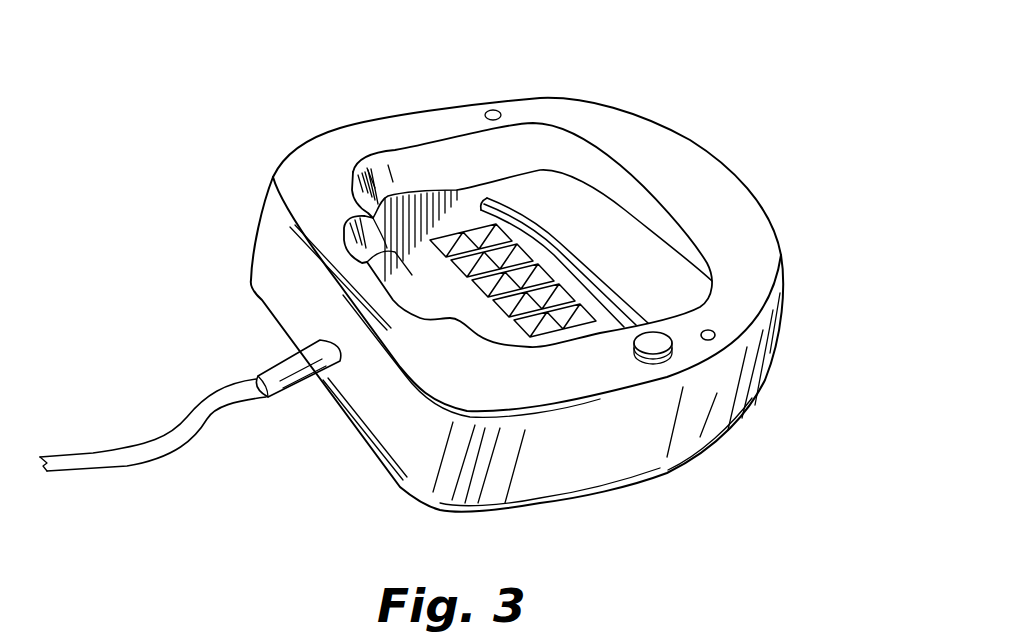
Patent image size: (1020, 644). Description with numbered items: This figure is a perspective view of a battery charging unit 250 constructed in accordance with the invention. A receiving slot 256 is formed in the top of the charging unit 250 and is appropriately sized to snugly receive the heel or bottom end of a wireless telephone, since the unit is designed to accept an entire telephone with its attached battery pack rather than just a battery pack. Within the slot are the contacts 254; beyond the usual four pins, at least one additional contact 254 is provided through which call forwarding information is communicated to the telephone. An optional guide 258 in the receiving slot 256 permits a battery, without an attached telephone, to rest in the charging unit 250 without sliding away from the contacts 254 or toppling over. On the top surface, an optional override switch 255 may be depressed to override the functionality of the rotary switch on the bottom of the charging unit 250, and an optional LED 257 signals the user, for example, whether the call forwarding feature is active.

The charging unit 250 is at (660, 476).
The contacts 254 is at (563, 319).
The override switch 255 is at (662, 347).
The receiving slot 256 is at (455, 168).
The LED 257 is at (714, 332).
The guide 258 is at (532, 221).